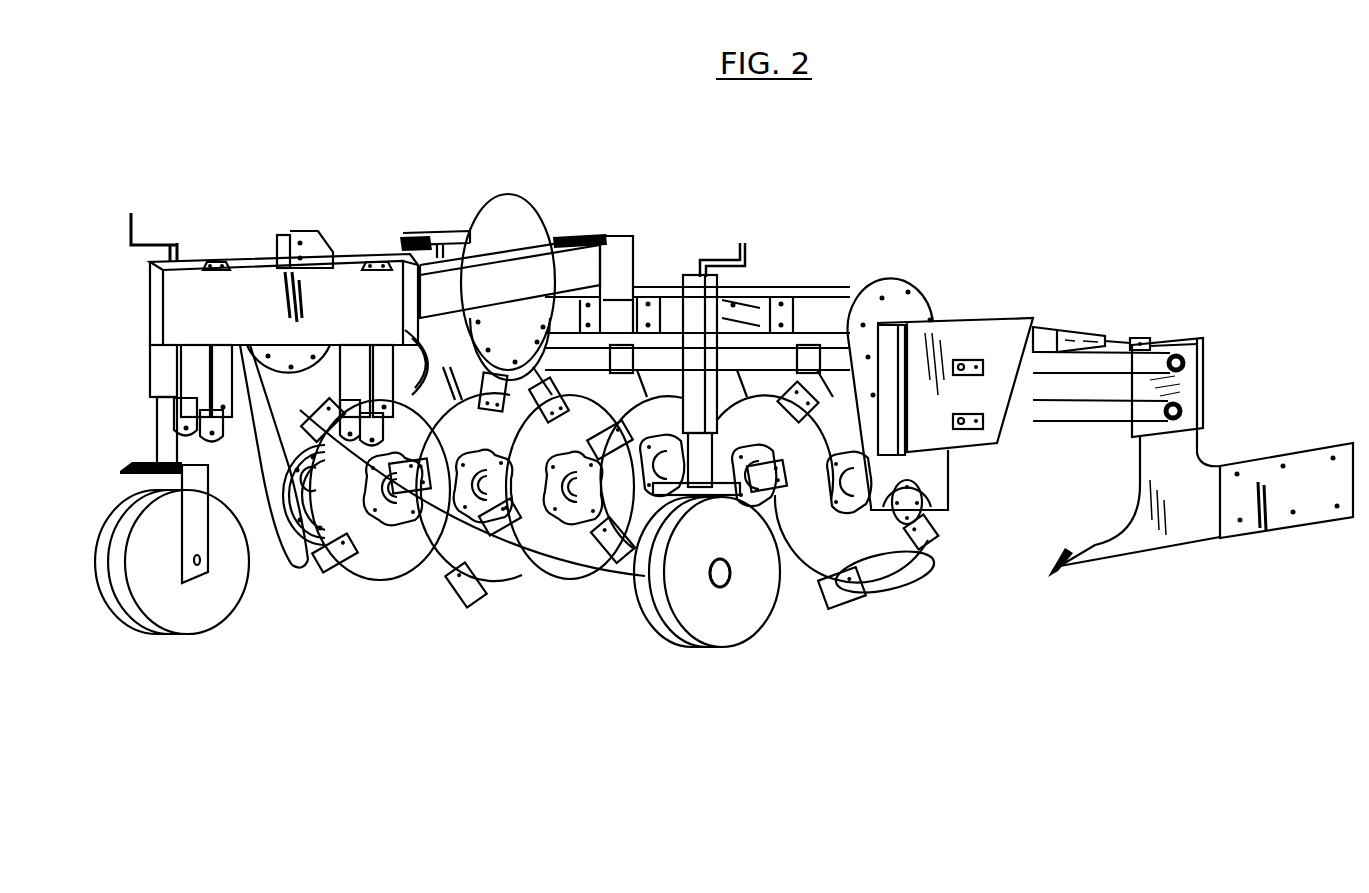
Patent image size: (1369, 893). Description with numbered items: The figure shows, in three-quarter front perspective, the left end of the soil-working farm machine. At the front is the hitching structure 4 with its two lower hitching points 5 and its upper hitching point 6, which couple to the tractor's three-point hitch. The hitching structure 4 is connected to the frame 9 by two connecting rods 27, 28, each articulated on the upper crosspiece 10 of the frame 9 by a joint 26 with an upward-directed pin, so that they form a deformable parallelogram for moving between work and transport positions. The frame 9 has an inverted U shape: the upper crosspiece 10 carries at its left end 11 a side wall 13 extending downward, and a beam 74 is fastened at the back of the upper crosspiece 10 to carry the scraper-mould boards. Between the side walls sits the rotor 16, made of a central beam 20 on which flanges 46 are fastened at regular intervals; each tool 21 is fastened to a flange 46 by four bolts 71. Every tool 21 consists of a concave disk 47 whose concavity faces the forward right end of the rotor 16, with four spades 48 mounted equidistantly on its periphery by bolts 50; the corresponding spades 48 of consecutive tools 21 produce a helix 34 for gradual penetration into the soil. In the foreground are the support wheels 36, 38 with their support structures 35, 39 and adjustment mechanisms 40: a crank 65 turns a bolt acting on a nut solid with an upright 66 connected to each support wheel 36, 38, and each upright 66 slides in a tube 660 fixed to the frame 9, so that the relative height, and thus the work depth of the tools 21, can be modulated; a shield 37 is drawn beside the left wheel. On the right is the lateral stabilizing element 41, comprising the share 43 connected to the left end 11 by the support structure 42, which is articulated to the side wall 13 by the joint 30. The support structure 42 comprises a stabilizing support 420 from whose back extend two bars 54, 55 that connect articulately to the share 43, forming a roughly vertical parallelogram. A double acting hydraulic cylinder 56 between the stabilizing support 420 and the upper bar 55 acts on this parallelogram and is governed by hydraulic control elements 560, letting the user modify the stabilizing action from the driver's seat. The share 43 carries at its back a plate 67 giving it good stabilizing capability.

The hitching structure 4 is at (243, 255).
The lower hitching points 5 is at (199, 430).
The upper hitching point 6 is at (283, 238).
The frame 9 is at (640, 240).
The upper crosspiece 10 is at (800, 292).
The left end 11 is at (866, 282).
The side wall 13 is at (893, 283).
The rotor 16 is at (590, 502).
The central beam 20 is at (310, 573).
The tools 21 is at (389, 563).
The joint 26 is at (212, 263).
The connecting rod 27 is at (385, 258).
The connecting rod 28 is at (514, 260).
The joint 30 is at (905, 322).
The helix 34 is at (598, 580).
The support structure 35 is at (160, 342).
The support wheel 36 is at (213, 615).
The shield 37 is at (275, 545).
The support wheel 38 is at (697, 626).
The support structure 39 is at (708, 385).
The adjustment mechanism 40 is at (157, 287).
The lateral stabilizing element 41 is at (1113, 446).
The support structure 42 is at (1008, 316).
The share 43 is at (1187, 467).
The flanges 46 is at (350, 565).
The concave disk 47 is at (512, 567).
The spades 48 is at (548, 245).
The bolts 50 is at (870, 548).
The bar 54 is at (1037, 423).
The upper bar 55 is at (1112, 360).
The double acting hydraulic cylinder 56 is at (1066, 325).
The crank 65 is at (147, 240).
The upright 66 is at (162, 416).
The plate 67 is at (1308, 515).
The bolts 71 is at (497, 448).
The beam 74 is at (784, 360).
The stabilizing support 420 is at (968, 437).
The hydraulic control elements 560 is at (1098, 335).
The tube 660 is at (152, 360).